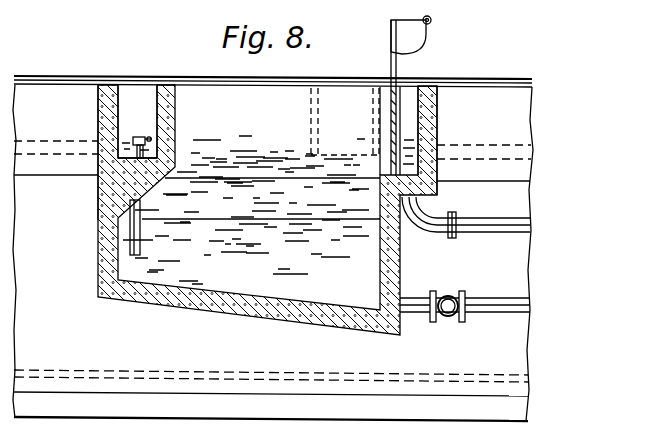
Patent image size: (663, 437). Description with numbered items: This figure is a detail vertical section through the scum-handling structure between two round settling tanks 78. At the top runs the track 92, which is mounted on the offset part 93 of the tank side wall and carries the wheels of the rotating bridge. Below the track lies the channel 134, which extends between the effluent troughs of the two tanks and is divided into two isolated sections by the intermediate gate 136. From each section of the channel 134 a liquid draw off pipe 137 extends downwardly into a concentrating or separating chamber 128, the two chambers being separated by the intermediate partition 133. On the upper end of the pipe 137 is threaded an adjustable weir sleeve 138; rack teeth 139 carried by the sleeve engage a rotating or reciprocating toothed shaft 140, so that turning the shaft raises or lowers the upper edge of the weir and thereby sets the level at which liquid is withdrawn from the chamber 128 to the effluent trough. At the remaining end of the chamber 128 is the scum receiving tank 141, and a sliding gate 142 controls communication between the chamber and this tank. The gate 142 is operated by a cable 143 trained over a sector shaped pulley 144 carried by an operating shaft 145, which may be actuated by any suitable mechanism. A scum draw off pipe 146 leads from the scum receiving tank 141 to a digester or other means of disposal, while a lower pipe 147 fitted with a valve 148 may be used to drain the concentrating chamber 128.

The round settling tank 78 is at (273, 253).
The track 92 is at (68, 76).
The offset part of the side wall 93 is at (48, 174).
The concentrating box or chamber 128 is at (269, 186).
The intermediate partition 133 is at (322, 293).
The channel 134 is at (118, 120).
The gate 136 is at (135, 90).
The liquid draw off pipe 137 is at (141, 249).
The adjustable weir sleeve 138 is at (141, 138).
The rack teeth 139 is at (149, 137).
The toothed shaft 140 is at (148, 140).
The scum receiving tank 141 is at (412, 128).
The sliding gate 142 is at (399, 106).
The cable 143 is at (391, 58).
The sector shaped pulley 144 is at (426, 43).
The operating shaft 145 is at (431, 19).
The scum draw off pipe 146 is at (487, 222).
The pipe 147 is at (490, 300).
The valve 148 is at (448, 295).